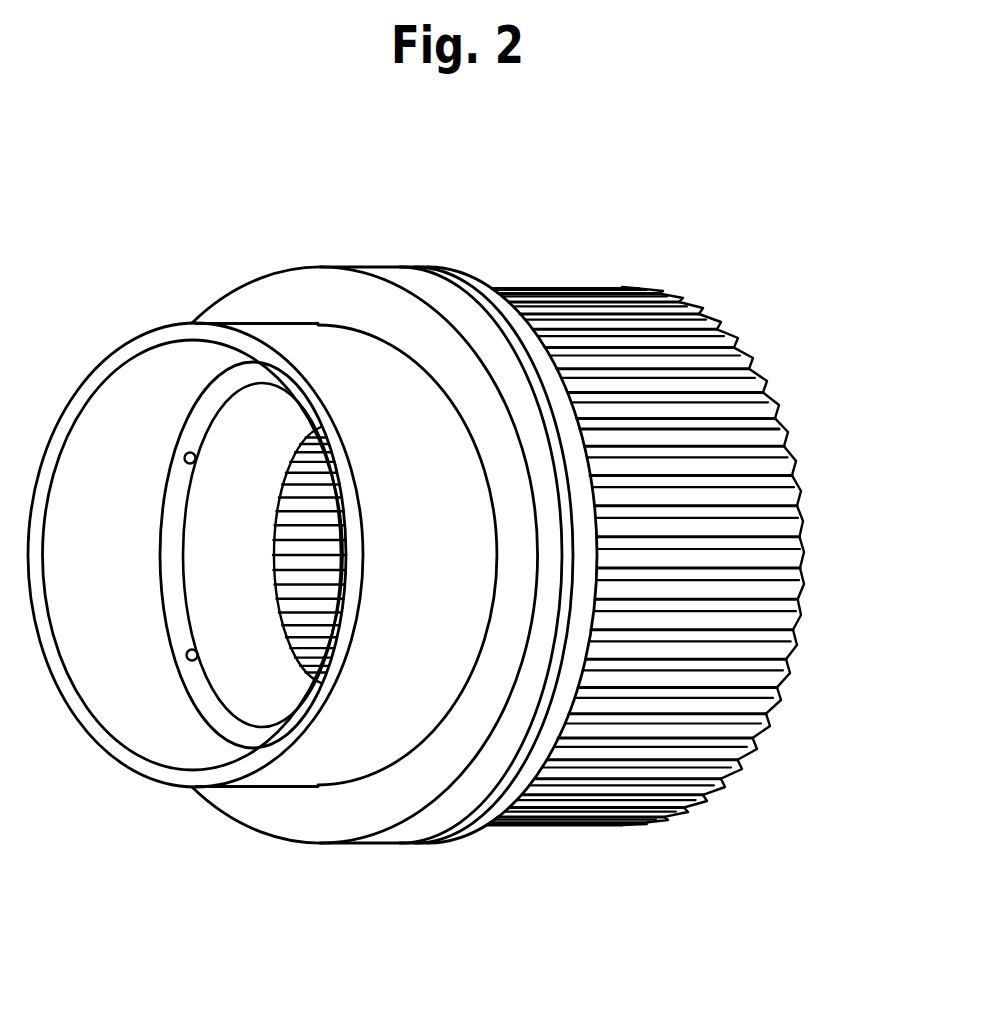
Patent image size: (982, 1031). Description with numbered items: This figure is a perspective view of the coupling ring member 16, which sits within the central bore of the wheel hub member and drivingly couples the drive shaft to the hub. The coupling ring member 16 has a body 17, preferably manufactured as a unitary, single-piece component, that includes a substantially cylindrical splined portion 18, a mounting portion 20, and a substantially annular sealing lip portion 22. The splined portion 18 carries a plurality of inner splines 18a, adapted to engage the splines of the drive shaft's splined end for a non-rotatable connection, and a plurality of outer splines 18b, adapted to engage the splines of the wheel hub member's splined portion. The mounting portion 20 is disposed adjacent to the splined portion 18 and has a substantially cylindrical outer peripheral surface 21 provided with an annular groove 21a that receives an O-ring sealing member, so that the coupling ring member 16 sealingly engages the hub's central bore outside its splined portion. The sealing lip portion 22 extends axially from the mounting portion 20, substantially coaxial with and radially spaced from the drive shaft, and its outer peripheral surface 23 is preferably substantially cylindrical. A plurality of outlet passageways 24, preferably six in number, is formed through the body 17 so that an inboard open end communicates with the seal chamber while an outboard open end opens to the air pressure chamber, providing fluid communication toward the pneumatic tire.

The coupling ring member 16 is at (640, 250).
The body 17 is at (285, 815).
The splined portion 18 is at (709, 324).
The inner splines 18a is at (303, 571).
The outer splines 18b is at (743, 424).
The mounting portion 20 is at (433, 269).
The outer peripheral surface 21 is at (413, 284).
The annular groove 21a is at (431, 840).
The sealing lip portion 22 is at (110, 706).
The outer peripheral surface 23 is at (313, 346).
The outlet passageways 24 is at (184, 458).